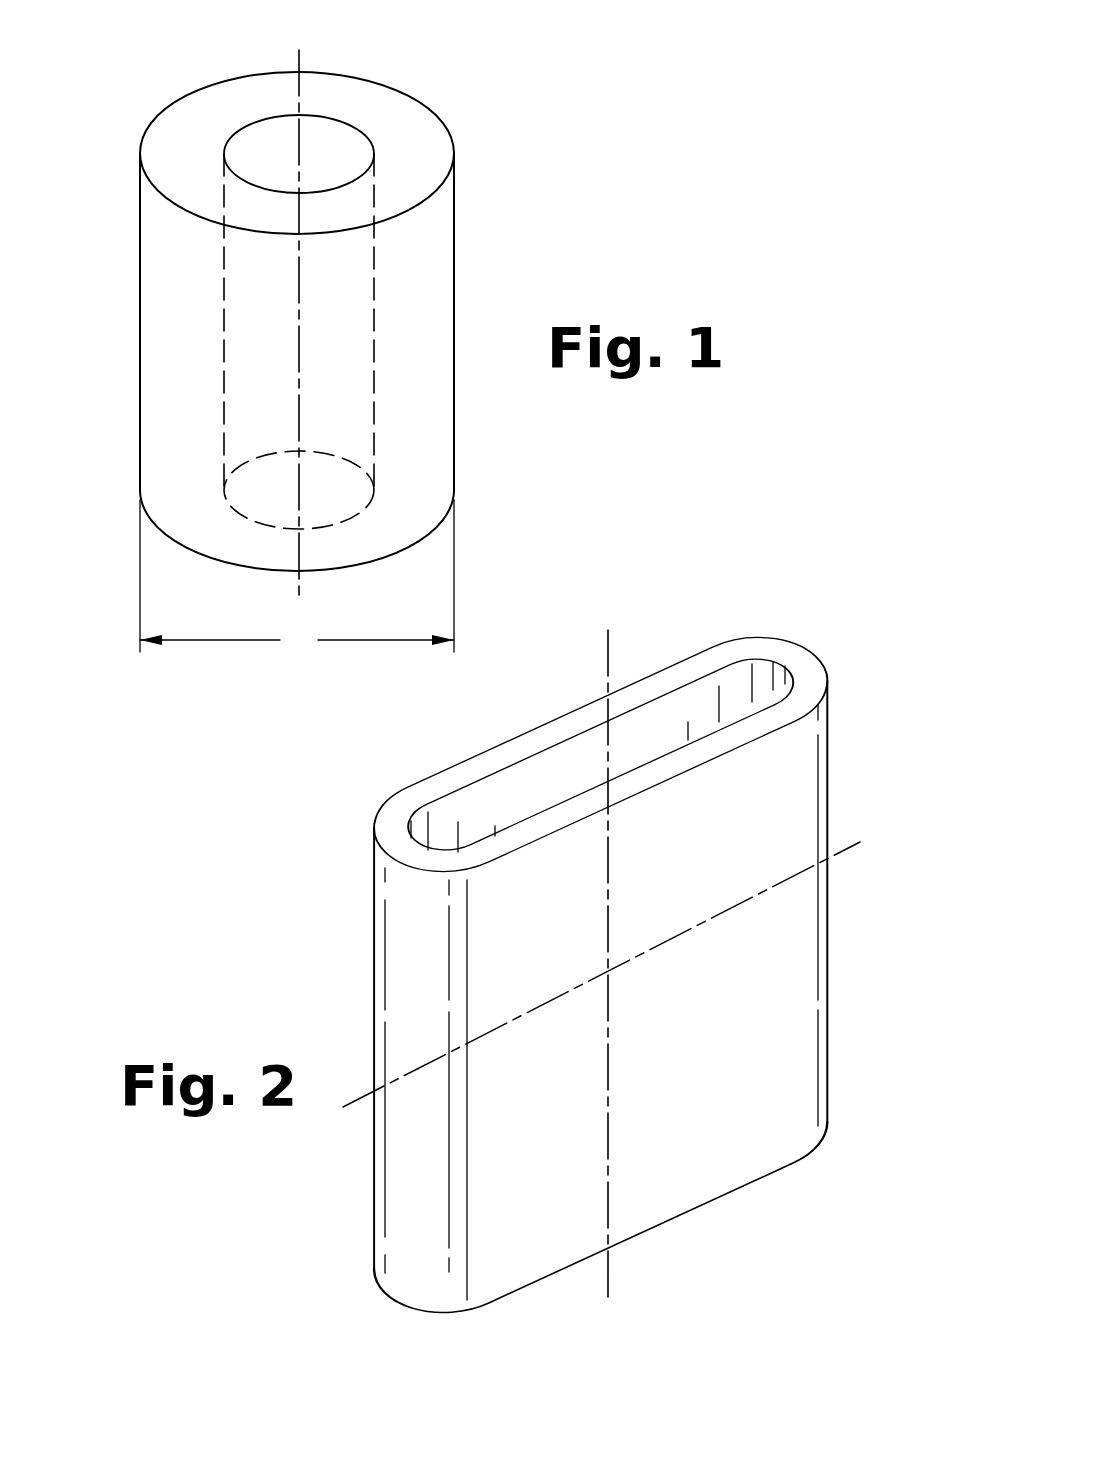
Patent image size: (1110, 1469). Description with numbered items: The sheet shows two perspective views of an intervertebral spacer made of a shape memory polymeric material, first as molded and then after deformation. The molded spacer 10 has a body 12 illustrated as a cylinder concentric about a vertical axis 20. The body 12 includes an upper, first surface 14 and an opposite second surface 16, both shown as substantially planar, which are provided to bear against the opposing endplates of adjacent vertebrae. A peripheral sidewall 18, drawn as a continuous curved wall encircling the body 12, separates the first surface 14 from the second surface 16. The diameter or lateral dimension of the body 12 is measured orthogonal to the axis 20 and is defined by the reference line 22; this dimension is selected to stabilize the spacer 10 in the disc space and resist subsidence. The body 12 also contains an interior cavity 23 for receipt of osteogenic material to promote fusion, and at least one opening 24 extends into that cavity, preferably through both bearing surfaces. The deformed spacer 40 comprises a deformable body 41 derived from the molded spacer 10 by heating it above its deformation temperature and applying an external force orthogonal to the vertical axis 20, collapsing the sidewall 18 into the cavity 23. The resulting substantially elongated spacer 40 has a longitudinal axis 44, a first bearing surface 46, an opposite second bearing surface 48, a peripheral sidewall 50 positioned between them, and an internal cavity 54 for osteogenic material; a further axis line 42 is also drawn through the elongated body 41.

In FIG. 1, the molded spacer 10 is at (339, 352).
In FIG. 1, the body 12 is at (514, 209).
In FIG. 1, the first surface 14 is at (181, 133).
In FIG. 1, the second surface 16 is at (392, 558).
In FIG. 1, the peripheral sidewall 18 is at (155, 405).
In FIG. 1, the vertical axis 20 is at (305, 92).
In FIG. 1, the reference line 22 is at (297, 577).
In FIG. 1, the interior cavity 23 is at (245, 303).
In FIG. 1, the opening 24 is at (357, 148).
In FIG. 2, the deformed spacer 40 is at (541, 941).
In FIG. 2, the deformable body 41 is at (407, 943).
In FIG. 2, the vertical axis 42 is at (608, 642).
In FIG. 2, the longitudinal axis 44 is at (859, 842).
In FIG. 2, the first bearing surface 46 is at (795, 658).
In FIG. 2, the second bearing surface 48 is at (720, 1190).
In FIG. 2, the peripheral sidewall 50 is at (737, 1027).
In FIG. 2, the internal cavity 54 is at (507, 804).